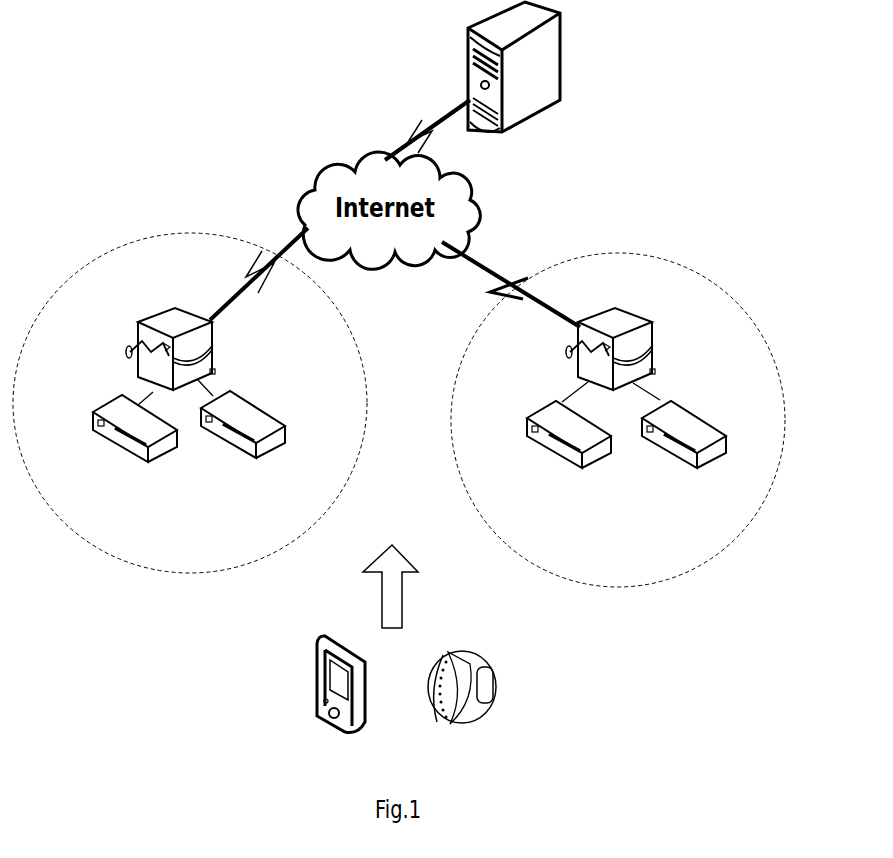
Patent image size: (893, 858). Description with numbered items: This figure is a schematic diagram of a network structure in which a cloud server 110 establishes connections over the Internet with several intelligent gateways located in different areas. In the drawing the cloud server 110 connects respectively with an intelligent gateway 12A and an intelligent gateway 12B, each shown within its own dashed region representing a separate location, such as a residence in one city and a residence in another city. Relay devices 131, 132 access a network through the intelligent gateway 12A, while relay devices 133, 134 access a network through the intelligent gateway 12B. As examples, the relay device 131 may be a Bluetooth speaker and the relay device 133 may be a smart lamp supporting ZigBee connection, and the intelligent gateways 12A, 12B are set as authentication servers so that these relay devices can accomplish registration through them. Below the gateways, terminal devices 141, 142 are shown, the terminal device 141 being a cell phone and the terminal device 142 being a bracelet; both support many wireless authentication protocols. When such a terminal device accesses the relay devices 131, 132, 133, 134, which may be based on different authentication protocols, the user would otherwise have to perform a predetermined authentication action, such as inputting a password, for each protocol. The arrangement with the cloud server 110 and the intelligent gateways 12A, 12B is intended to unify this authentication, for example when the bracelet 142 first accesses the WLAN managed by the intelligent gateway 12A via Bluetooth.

The cloud server 110 is at (514, 85).
The intelligent gateway 12A is at (170, 328).
The intelligent gateway 12B is at (610, 331).
The relay device 131 is at (135, 449).
The relay device 132 is at (243, 448).
The relay device 133 is at (567, 458).
The relay device 134 is at (684, 457).
The terminal device 141 is at (343, 703).
The terminal device 142 is at (462, 709).